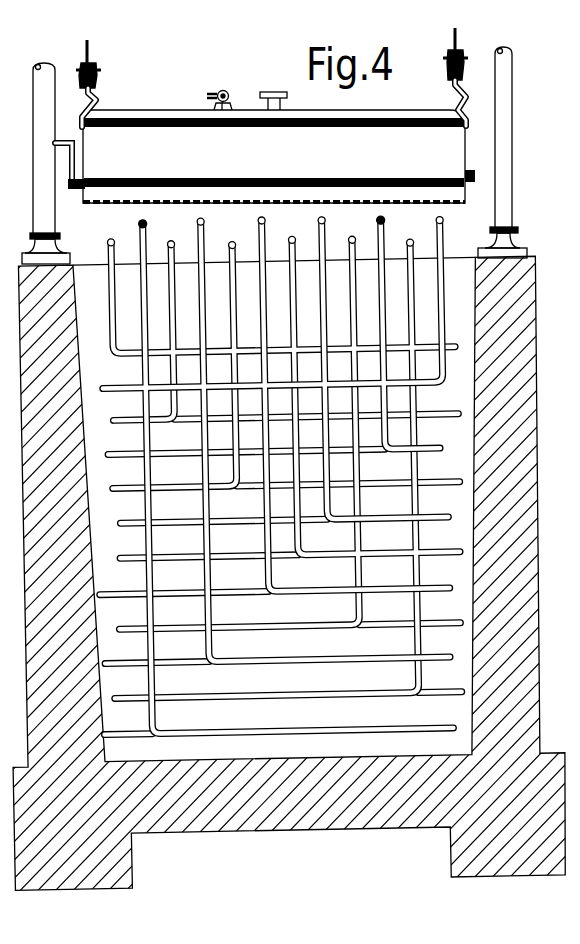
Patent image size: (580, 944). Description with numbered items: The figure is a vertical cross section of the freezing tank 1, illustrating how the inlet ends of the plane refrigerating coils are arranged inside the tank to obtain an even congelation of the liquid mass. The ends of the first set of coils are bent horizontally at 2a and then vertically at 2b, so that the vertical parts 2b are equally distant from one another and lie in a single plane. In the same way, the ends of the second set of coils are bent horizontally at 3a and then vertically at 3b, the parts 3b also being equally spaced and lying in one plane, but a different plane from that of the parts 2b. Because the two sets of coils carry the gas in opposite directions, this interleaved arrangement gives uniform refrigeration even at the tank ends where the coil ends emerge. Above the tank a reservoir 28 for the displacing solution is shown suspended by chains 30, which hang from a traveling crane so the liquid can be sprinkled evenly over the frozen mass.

The tank 1 is at (467, 308).
The horizontally bent part of coil ends 2a is at (126, 420).
The vertically bent part of coil ends 2b is at (112, 333).
The horizontally bent part of coil ends 3a is at (427, 518).
The vertically bent part of coil ends 3b is at (198, 224).
The header tank 28 is at (265, 147).
The chains 30 is at (90, 55).